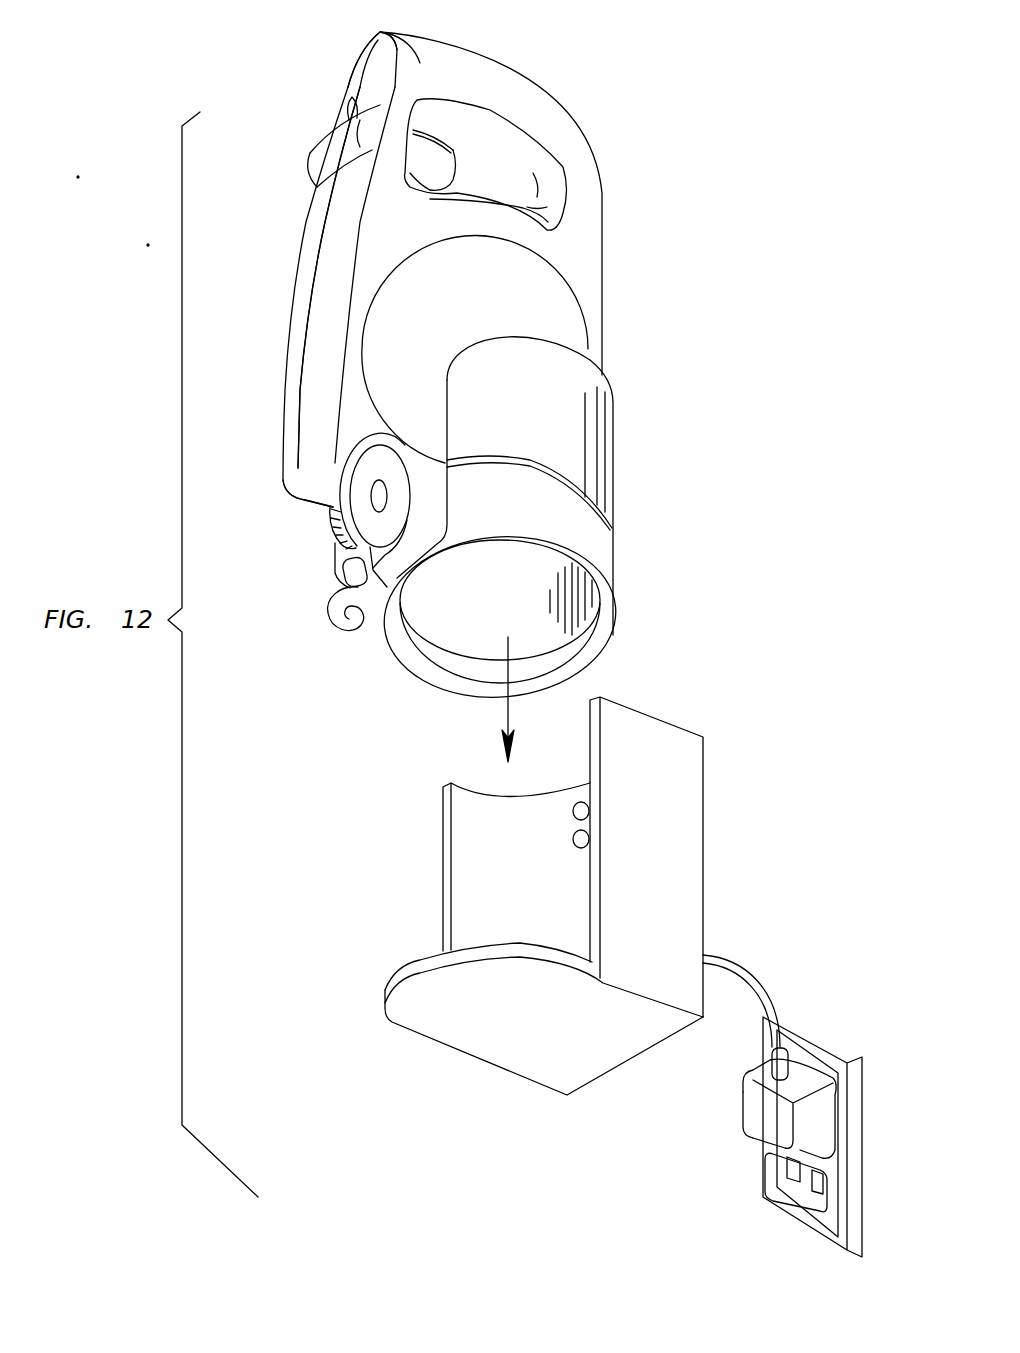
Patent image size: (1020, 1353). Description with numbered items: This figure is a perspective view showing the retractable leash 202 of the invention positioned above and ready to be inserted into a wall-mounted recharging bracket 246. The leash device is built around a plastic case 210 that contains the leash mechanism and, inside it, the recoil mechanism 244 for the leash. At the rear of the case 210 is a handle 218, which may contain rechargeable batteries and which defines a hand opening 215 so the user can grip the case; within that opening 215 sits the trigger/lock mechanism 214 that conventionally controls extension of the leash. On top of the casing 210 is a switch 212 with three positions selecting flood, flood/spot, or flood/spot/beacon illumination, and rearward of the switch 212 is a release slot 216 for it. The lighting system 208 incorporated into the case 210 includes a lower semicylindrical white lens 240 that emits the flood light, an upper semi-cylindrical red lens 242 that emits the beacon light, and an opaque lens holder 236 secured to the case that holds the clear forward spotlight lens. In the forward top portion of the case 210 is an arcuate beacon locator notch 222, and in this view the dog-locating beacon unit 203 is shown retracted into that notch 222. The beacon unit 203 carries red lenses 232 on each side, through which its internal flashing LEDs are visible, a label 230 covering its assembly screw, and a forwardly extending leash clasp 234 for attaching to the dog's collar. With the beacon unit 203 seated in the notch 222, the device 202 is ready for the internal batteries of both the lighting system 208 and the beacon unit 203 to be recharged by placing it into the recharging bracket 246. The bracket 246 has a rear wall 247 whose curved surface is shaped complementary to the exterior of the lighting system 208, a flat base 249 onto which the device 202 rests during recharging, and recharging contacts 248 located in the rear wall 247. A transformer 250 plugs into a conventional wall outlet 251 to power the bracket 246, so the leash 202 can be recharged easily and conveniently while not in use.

The retractable leash 202 is at (280, 391).
The dog-locating beacon unit 203 is at (307, 603).
The lighting system 208 is at (489, 385).
The case 210 is at (308, 317).
The switch 212 is at (323, 157).
The trigger/lock mechanism 214 is at (453, 153).
The hand opening 215 is at (493, 168).
The release slot 216 is at (350, 104).
The handle 218 is at (382, 32).
The beacon locator notch 222 is at (347, 452).
The label 230 is at (376, 492).
The red lenses 232 is at (335, 527).
The leash clasp 234 is at (333, 625).
The lens holder 236 is at (597, 558).
The white lens 240 is at (603, 418).
The red lens 242 is at (565, 452).
The recoil mechanism 244 is at (543, 292).
The recharging bracket 246 is at (549, 878).
The rear wall 247 is at (477, 857).
The recharging contacts 248 is at (591, 835).
The flat base 249 is at (413, 962).
The transformer 250 is at (760, 1120).
The wall outlet 251 is at (787, 1167).